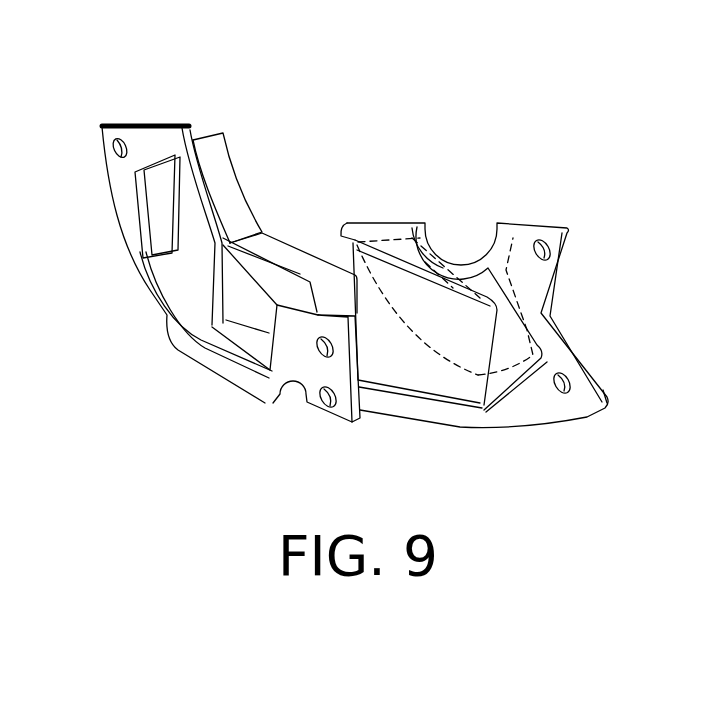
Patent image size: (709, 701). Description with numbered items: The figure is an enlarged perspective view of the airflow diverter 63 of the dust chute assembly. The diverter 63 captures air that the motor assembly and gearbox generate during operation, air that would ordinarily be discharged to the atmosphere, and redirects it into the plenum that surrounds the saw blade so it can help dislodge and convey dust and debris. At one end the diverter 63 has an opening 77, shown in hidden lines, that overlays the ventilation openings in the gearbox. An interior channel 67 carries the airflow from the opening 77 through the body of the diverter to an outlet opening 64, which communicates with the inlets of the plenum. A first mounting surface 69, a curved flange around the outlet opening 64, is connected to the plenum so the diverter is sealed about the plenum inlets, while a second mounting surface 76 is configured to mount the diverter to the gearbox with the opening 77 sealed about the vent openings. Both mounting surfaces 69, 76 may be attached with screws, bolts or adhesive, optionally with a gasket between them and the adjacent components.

The airflow diverter 63 is at (283, 232).
The outlet opening 64 is at (163, 218).
The interior channel 67 is at (262, 312).
The first mounting surface 69 is at (151, 145).
The second mounting surface 76 is at (583, 370).
The opening 77 is at (513, 238).